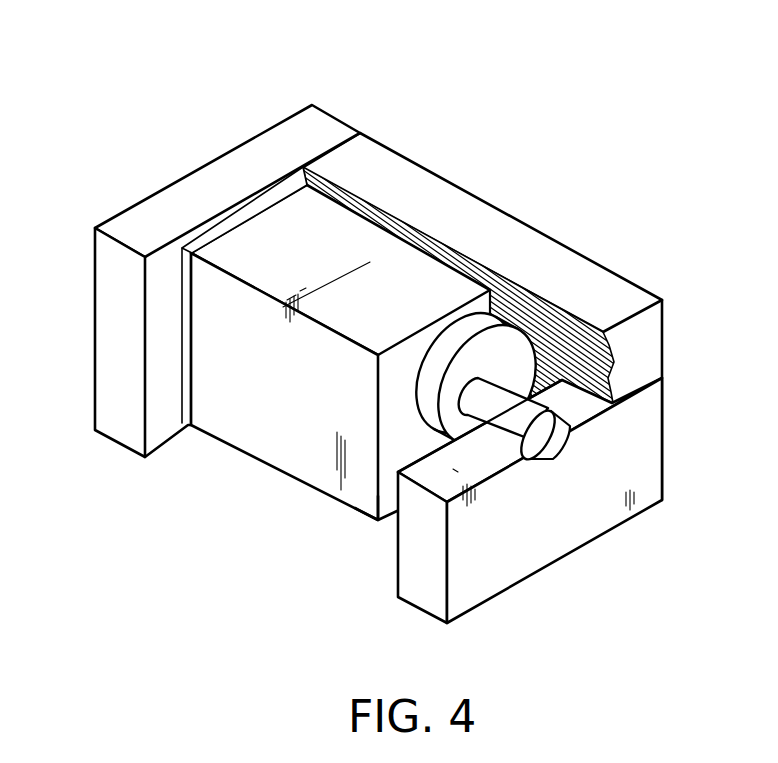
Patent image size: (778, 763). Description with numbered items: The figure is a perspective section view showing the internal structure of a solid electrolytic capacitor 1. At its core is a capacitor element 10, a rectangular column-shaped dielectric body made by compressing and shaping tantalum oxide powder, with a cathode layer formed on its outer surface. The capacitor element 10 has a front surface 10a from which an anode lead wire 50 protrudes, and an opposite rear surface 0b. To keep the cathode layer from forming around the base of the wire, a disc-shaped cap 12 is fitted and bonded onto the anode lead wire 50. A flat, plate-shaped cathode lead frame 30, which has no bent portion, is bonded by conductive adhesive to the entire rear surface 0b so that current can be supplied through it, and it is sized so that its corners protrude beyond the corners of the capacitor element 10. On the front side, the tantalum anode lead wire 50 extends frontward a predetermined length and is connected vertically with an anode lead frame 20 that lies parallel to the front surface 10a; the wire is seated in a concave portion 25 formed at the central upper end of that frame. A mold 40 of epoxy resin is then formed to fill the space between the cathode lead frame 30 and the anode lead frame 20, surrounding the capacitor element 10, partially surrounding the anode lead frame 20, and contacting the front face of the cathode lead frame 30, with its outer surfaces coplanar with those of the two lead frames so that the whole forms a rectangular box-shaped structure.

The motor assembly 1 is at (596, 45).
The capacitor element 10 is at (256, 392).
The front surface 10a is at (387, 518).
The rear surface 0b is at (178, 330).
The disc-shaped cap 12 is at (465, 343).
The anode lead frame 20 is at (503, 577).
The concave portion 25 is at (558, 456).
The cathode lead frame 30 is at (214, 165).
The mold 40 is at (607, 290).
The anode lead wire 50 is at (527, 399).